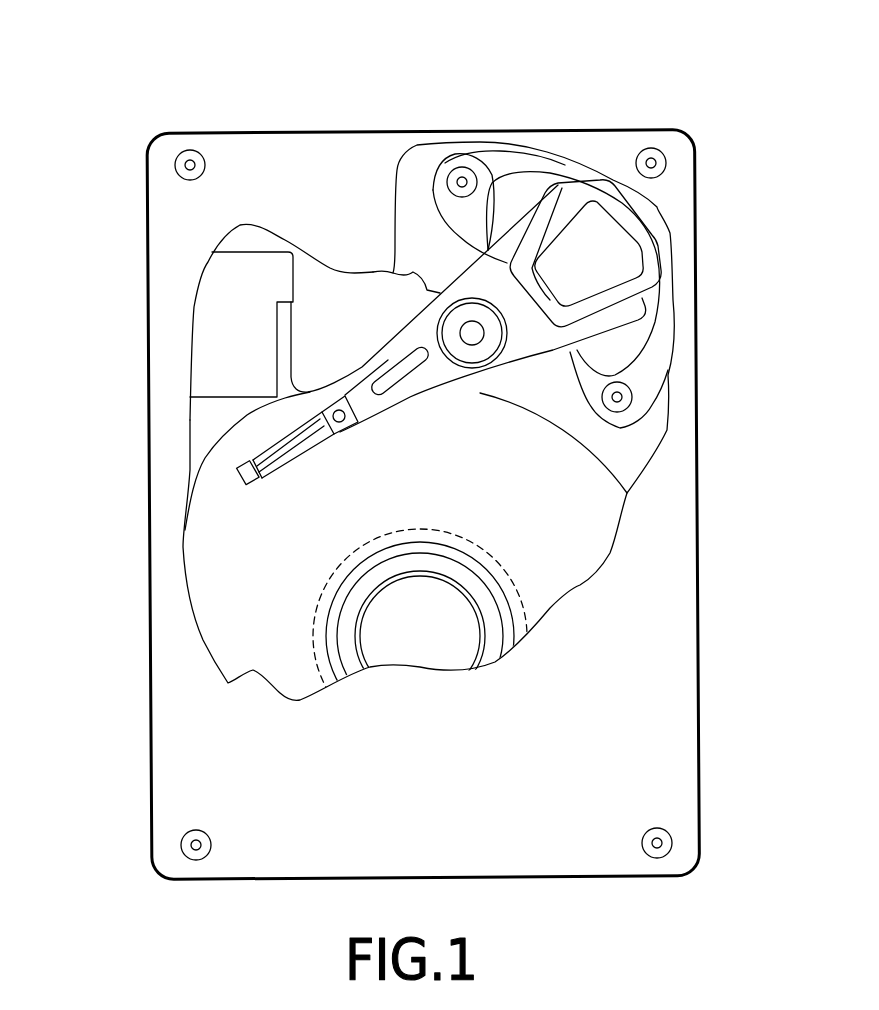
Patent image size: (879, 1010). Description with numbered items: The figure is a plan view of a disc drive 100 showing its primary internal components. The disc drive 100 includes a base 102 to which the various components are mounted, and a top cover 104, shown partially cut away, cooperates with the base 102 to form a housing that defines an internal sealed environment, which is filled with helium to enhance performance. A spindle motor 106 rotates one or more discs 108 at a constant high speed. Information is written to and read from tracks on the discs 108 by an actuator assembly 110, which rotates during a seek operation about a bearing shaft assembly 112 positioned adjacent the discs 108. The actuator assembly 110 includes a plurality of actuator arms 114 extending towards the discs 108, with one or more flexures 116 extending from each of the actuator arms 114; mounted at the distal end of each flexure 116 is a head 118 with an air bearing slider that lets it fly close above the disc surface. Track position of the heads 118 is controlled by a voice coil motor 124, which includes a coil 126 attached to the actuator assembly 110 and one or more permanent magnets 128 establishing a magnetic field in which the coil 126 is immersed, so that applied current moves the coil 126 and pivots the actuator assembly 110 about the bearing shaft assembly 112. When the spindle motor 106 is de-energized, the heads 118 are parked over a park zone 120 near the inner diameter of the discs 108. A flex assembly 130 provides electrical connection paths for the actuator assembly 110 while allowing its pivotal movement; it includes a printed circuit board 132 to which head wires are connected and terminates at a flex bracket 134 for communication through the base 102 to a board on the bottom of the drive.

The disc drive 100 is at (186, 93).
The base 102 is at (215, 451).
The top cover 104 is at (197, 730).
The spindle motor 106 is at (422, 642).
The discs 108 is at (577, 557).
The actuator assembly 110 is at (458, 408).
The bearing shaft assembly 112 is at (487, 347).
The actuator arms 114 is at (412, 393).
The flexures 116 is at (290, 447).
The head 118 is at (242, 487).
The park zone 120 is at (313, 629).
The voice coil motor 124 is at (501, 132).
The coil 126 is at (643, 250).
The permanent magnets 128 is at (502, 208).
The flex assembly 130 is at (390, 337).
The printed circuit board 132 is at (403, 287).
The flex bracket 134 is at (228, 337).